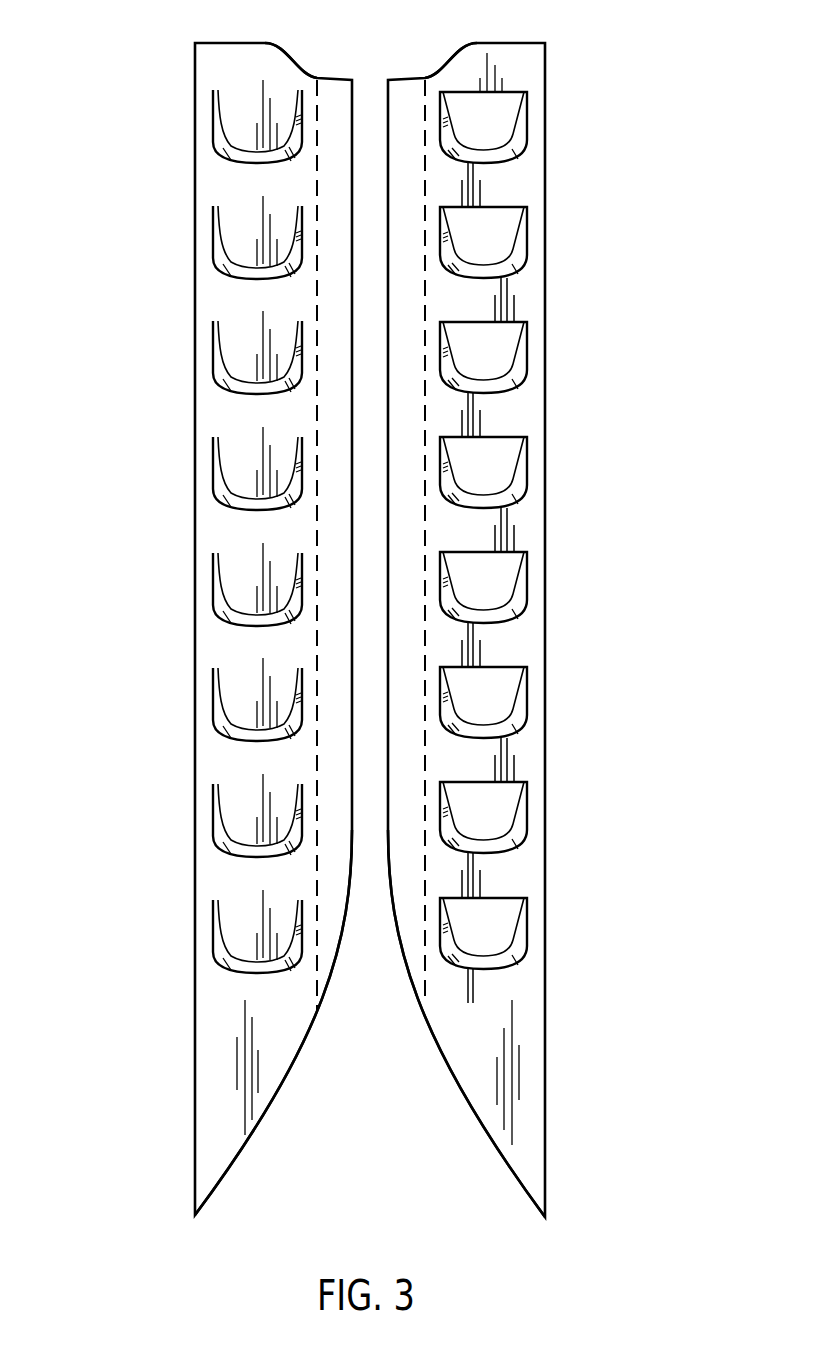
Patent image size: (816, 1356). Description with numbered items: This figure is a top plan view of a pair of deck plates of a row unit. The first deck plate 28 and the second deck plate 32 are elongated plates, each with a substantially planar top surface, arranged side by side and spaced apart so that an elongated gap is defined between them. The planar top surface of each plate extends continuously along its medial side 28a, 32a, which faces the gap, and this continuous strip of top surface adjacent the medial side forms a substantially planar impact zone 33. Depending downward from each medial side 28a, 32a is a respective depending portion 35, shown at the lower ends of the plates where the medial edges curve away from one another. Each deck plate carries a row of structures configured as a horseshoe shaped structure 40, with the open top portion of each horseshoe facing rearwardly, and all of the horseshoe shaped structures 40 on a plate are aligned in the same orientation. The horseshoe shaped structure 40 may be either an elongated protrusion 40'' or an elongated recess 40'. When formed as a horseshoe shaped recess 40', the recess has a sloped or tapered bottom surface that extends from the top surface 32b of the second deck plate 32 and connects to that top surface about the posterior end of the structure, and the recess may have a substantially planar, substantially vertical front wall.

The first deck plate 28 is at (293, 1078).
The second deck plate 32 is at (452, 1082).
The medial side 28a is at (317, 856).
The medial side 32a is at (425, 866).
The top surface 32b is at (478, 782).
The impact zone 33 is at (309, 74).
The depending portion 35 is at (332, 988).
The horseshoe shaped structure 40 is at (195, 584).
The elongated protrusion 40'' is at (178, 121).
The elongated recess 40' is at (585, 511).